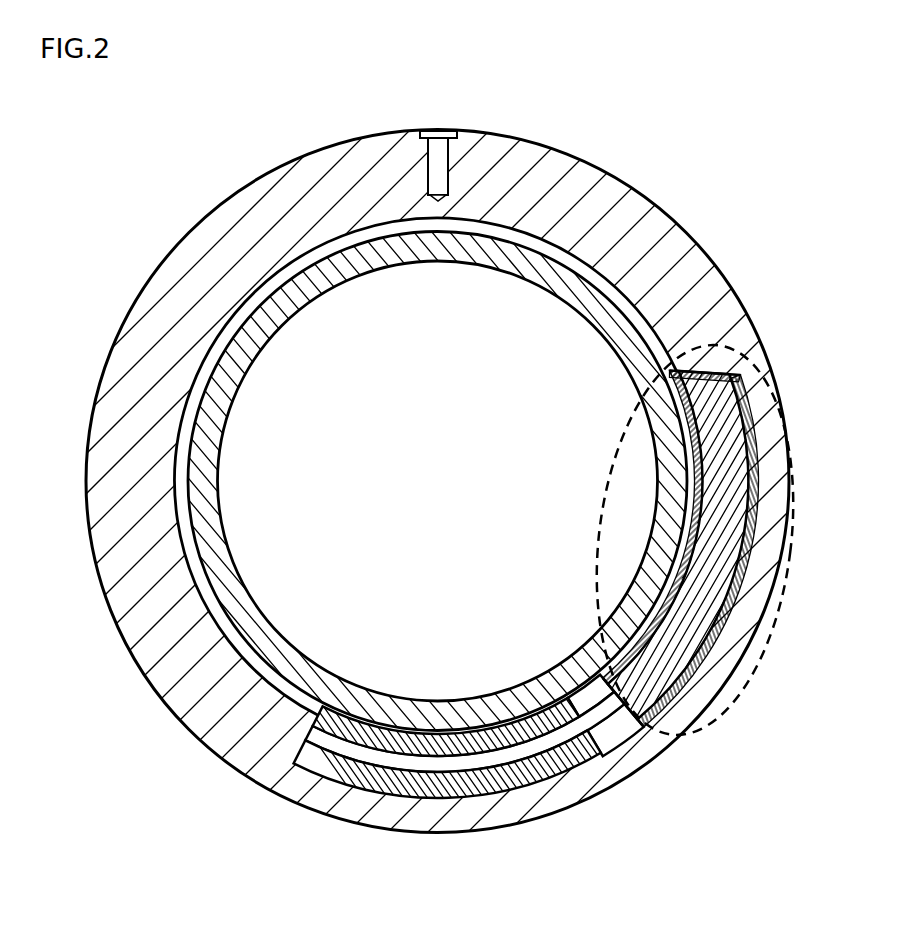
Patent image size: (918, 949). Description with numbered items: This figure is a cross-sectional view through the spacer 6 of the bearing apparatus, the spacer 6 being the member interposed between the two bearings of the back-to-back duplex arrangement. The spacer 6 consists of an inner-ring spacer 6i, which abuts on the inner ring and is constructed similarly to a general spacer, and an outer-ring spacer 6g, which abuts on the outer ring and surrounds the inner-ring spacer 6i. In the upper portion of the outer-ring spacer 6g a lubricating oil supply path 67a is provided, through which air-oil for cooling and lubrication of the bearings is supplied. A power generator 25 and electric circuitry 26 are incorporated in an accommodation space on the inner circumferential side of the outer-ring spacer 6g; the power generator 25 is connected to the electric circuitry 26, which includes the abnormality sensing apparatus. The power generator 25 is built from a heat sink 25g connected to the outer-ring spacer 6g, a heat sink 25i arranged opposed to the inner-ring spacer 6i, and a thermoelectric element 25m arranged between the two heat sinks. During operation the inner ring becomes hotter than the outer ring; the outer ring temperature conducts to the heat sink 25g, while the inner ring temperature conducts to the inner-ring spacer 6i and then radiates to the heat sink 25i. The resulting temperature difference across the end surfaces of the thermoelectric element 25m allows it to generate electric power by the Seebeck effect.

The spacer 6 is at (459, 494).
The outer-ring spacer 6g is at (275, 757).
The inner-ring spacer 6i is at (270, 655).
The power generator 25 is at (486, 804).
The heat sink 25g is at (513, 893).
The thermoelectric element 25m is at (435, 767).
The heat sink 25i is at (502, 742).
The electric circuitry 26 is at (737, 353).
The lubricating oil supply path 67a is at (442, 153).